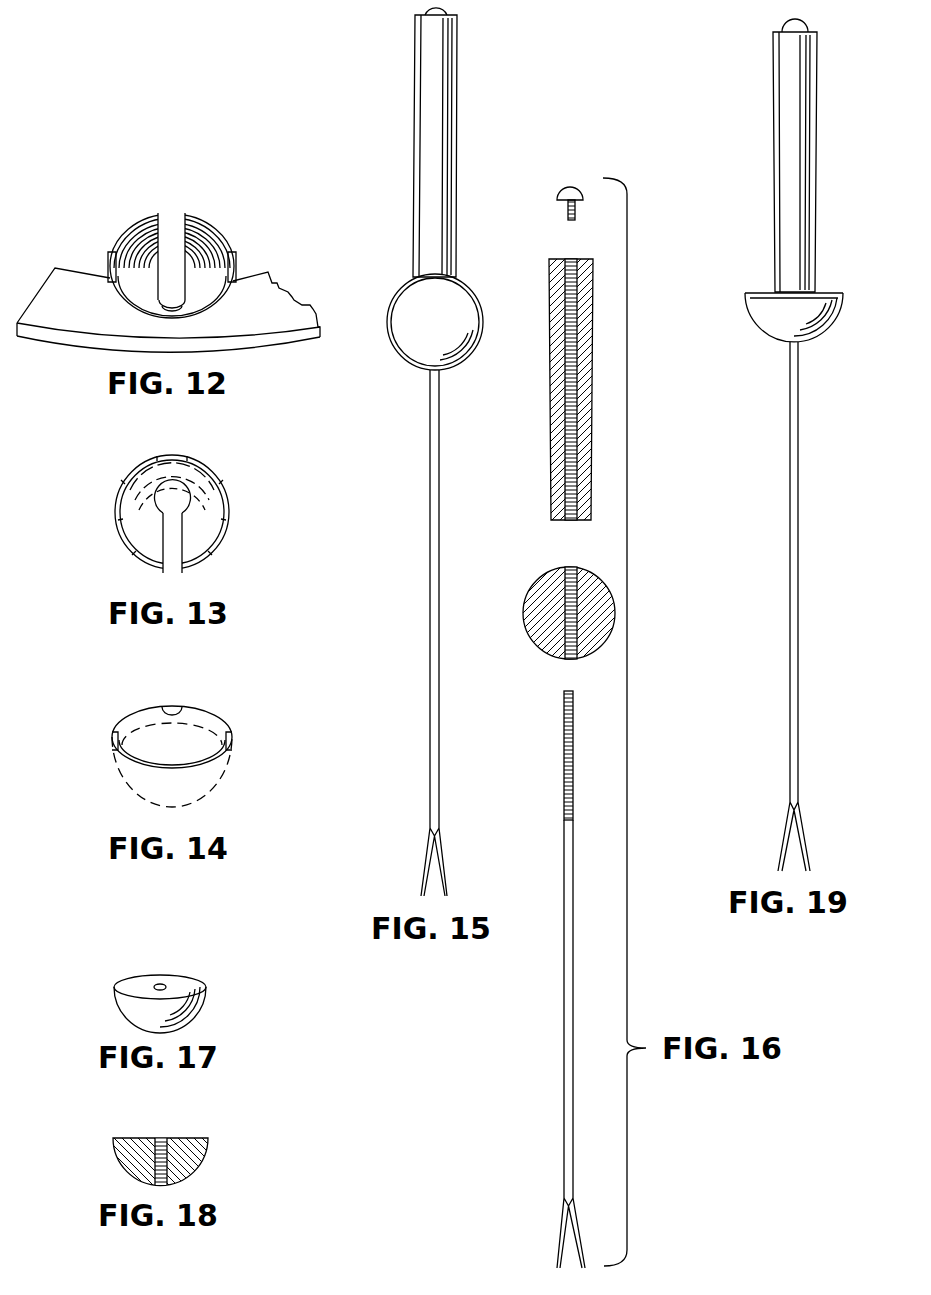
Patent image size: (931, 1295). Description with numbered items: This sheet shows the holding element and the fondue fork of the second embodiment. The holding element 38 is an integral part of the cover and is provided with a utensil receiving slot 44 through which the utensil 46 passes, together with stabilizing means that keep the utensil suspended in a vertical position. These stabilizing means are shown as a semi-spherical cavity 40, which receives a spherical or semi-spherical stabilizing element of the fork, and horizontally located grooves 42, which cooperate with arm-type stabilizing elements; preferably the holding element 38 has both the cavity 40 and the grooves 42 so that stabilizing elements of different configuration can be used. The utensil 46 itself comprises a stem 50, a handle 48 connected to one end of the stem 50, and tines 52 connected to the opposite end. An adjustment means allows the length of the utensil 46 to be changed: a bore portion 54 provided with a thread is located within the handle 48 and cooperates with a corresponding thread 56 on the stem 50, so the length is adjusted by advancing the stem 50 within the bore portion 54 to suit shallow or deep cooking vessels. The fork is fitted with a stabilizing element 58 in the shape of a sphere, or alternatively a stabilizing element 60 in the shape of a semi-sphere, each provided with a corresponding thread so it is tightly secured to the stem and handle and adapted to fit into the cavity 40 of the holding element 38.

In FIG. 14, the holding element 38 is at (147, 710).
In FIG. 14, the semi-spherical cavity 40 is at (190, 740).
In FIG. 13, the grooves 42 is at (223, 491).
In FIG. 13, the utensil receiving slot 44 is at (183, 545).
In FIG. 15, the utensil 46 is at (448, 6).
In FIG. 15, the handle 48 is at (412, 98).
In FIG. 19, the handle 48 is at (775, 152).
In FIG. 15, the stem 50 is at (430, 517).
In FIG. 15, the tines 52 is at (423, 878).
In FIG. 16, the tines 52 is at (562, 1240).
In FIG. 19, the tines 52 is at (783, 843).
In FIG. 16, the bore portion 54 is at (575, 440).
In FIG. 16, the thread 56 is at (573, 720).
In FIG. 15, the spherical stabilizing element 58 is at (413, 342).
In FIG. 16, the spherical stabilizing element 58 is at (575, 608).
In FIG. 17, the semi-spherical stabilizing element 60 is at (138, 983).
In FIG. 19, the semi-spherical stabilizing element 60 is at (757, 318).